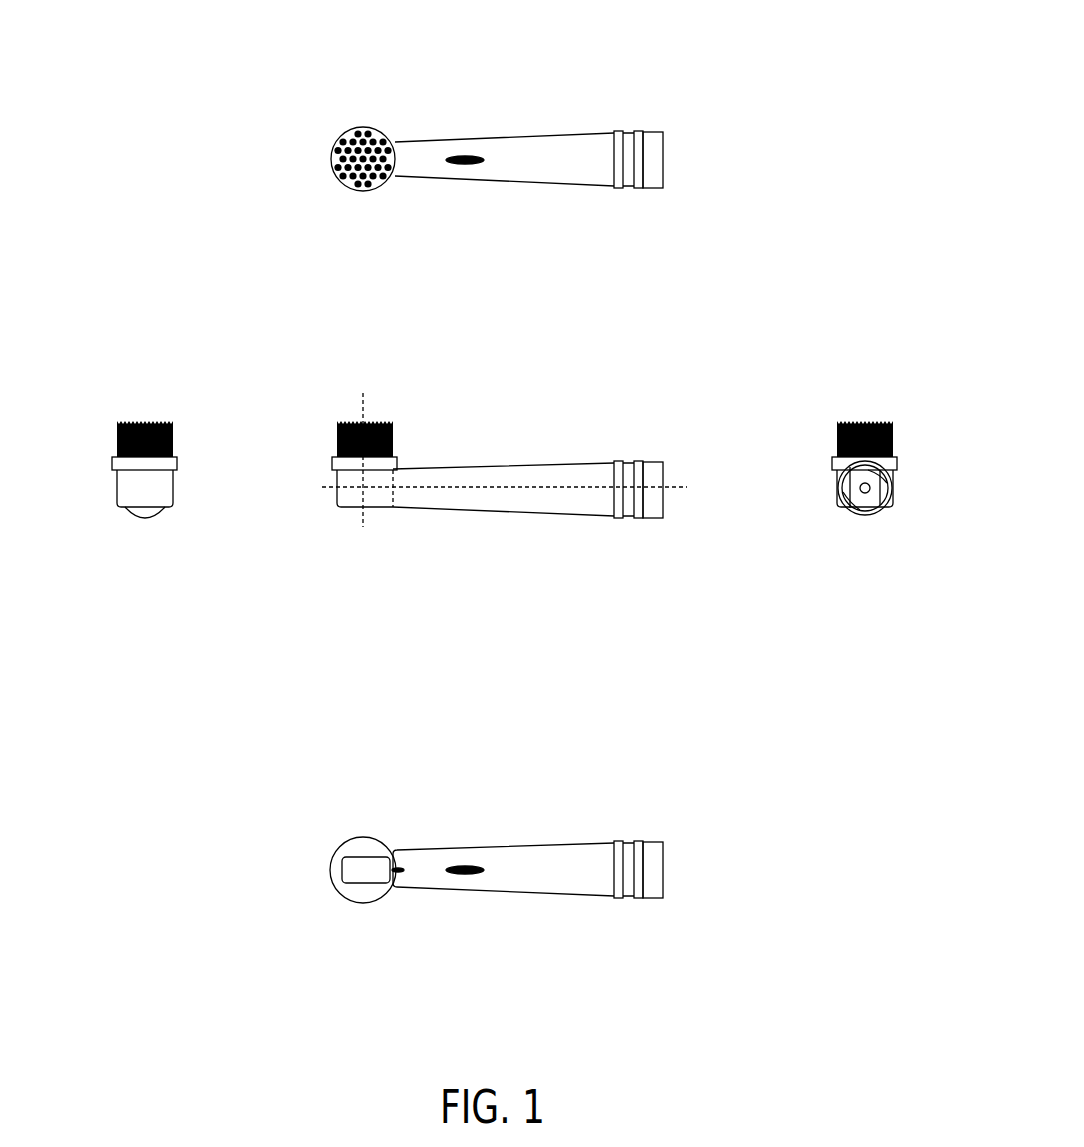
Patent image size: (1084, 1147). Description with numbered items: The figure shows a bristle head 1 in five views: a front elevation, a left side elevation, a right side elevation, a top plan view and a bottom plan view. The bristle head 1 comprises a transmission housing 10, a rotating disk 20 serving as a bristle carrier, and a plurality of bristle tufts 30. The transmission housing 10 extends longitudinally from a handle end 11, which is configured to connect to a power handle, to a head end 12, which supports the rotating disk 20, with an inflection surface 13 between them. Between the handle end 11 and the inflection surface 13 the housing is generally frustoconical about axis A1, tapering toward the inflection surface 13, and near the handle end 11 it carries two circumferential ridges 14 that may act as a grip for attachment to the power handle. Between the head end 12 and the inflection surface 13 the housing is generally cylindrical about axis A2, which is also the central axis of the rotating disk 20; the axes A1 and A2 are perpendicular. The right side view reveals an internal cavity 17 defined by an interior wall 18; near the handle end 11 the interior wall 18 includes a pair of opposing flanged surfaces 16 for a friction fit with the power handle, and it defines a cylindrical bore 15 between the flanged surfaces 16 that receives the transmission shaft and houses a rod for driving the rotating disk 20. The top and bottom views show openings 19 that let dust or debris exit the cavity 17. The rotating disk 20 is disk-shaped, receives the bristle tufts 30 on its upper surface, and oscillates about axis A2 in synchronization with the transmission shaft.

The bristle head 1 is at (680, 55).
The transmission housing 10 is at (550, 134).
The handle end 11 is at (666, 143).
The head end 12 is at (117, 500).
The inflection surface 13 is at (391, 509).
The circumferential ridges 14 is at (643, 128).
The cylindrical bore 15 is at (871, 488).
The flanged surfaces 16 is at (892, 505).
The internal cavity 17 is at (893, 472).
The interior wall 18 is at (853, 510).
The openings 19 is at (473, 157).
The rotating disk 20 is at (363, 127).
The bristle tufts 30 is at (331, 148).
The axis A1 is at (517, 486).
The axis A2 is at (364, 471).